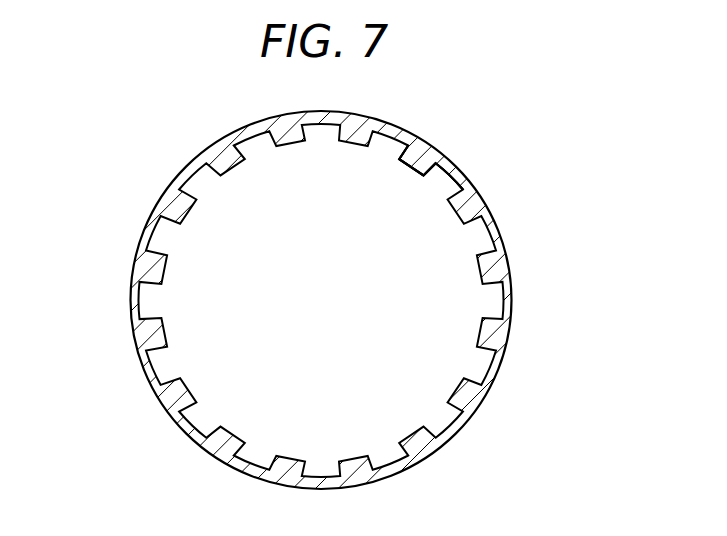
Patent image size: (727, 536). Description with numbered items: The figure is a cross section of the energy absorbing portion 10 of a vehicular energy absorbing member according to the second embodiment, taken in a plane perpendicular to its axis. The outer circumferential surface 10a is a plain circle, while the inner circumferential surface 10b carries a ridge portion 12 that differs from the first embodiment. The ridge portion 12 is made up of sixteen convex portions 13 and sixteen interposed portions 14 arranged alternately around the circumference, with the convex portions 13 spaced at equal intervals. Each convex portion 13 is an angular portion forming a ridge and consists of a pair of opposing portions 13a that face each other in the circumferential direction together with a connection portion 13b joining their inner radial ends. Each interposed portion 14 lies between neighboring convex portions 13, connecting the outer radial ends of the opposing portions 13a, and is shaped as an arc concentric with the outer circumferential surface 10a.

The energy absorbing portion 10 is at (422, 150).
The outer circumferential surface 10a is at (477, 192).
The inner circumferential surface 10b is at (420, 432).
The ridge portion 12 is at (467, 300).
The convex portion 13 is at (415, 270).
The opposing portion 13a is at (432, 174).
The connection portion 13b is at (414, 173).
The interposed portion 14 is at (446, 174).